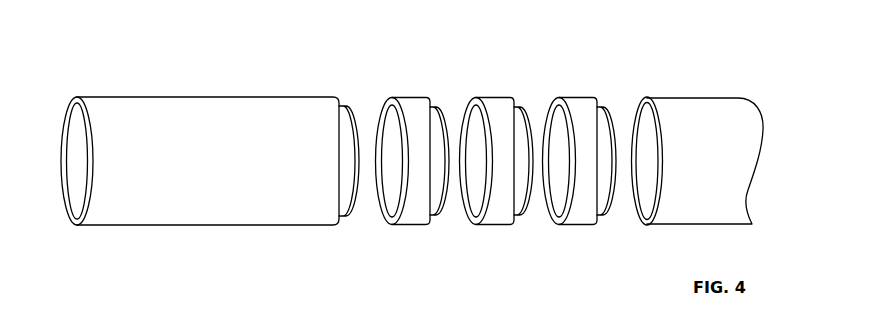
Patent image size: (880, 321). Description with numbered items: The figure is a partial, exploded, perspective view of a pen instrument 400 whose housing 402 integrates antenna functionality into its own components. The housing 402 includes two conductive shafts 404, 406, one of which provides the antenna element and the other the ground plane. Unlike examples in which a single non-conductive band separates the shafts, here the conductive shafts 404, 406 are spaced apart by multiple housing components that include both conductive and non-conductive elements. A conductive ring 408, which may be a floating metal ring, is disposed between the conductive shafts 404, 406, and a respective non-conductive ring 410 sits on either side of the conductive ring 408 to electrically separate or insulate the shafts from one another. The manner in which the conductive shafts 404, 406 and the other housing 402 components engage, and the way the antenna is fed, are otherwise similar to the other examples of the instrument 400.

The instrument 400 is at (119, 61).
The housing 402 is at (650, 48).
The conductive shaft 404 is at (233, 98).
The conductive shaft 406 is at (737, 100).
The conductive ring 408 is at (493, 97).
The non-conductive ring 410 is at (410, 97).